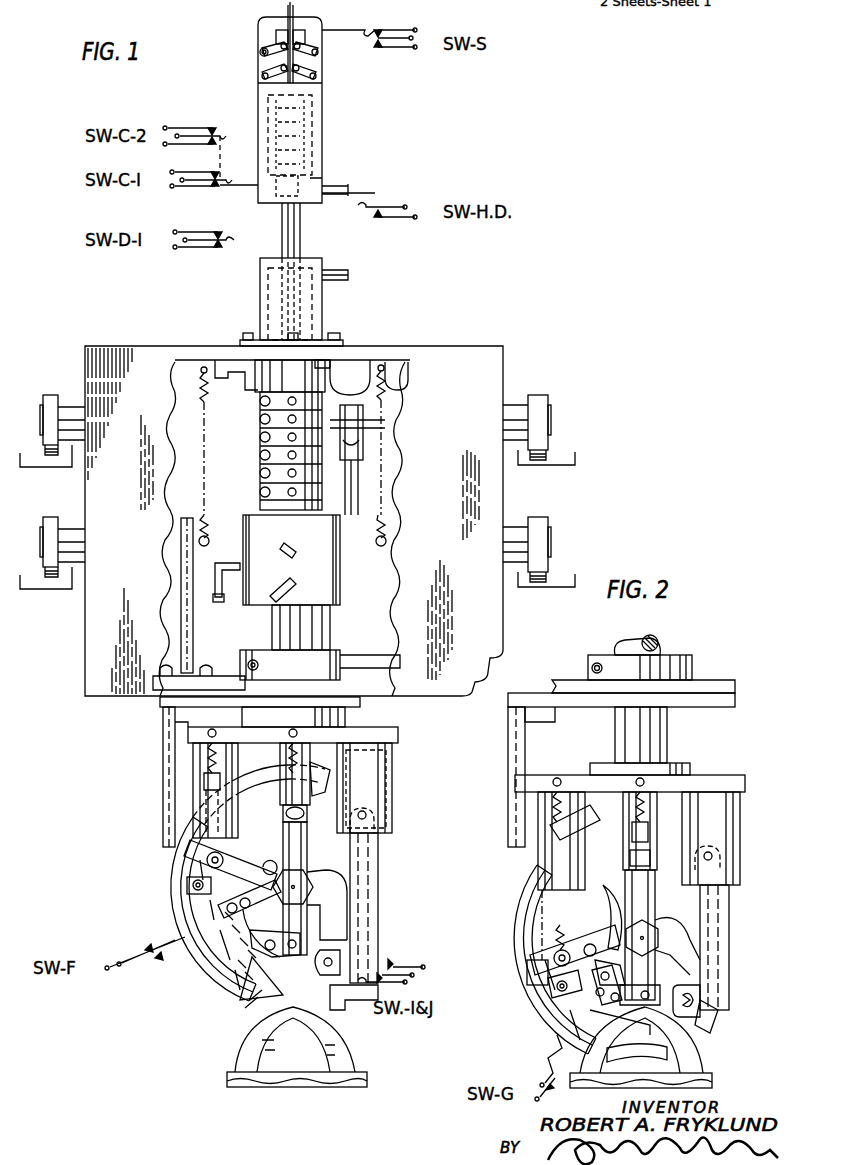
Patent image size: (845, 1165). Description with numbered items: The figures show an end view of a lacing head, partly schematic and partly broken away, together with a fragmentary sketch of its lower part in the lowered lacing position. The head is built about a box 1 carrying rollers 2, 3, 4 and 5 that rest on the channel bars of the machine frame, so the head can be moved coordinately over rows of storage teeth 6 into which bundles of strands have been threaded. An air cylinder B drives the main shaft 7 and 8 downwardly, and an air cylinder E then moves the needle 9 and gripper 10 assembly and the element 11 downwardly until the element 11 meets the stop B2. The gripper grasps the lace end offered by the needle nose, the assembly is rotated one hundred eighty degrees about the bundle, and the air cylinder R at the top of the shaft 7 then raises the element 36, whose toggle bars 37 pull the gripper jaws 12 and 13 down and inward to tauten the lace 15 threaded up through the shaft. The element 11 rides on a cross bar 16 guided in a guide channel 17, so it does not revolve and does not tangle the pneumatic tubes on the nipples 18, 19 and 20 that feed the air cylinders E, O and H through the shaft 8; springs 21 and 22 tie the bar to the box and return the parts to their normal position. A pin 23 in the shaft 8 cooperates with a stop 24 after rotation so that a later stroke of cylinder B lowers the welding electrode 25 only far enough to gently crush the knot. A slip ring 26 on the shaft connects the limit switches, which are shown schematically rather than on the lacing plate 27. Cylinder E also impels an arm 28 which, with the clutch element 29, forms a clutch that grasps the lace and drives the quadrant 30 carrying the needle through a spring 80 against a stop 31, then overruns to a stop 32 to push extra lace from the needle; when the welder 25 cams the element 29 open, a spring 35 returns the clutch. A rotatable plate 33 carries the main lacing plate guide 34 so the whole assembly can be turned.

In FIG. 1, the box 1 is at (490, 348).
In FIG. 1, the roller 2 is at (538, 395).
In FIG. 1, the roller 3 is at (538, 517).
In FIG. 1, the roller 4 is at (48, 395).
In FIG. 1, the roller 5 is at (48, 517).
In FIG. 1, the storage teeth 6 is at (247, 1035).
In FIG. 2, the storage teeth 6 is at (630, 1010).
In FIG. 1, the main shaft 7 is at (297, 232).
In FIG. 1, the main shaft 8 is at (272, 628).
In FIG. 2, the main shaft 8 is at (660, 640).
In FIG. 1, the needle 9 is at (245, 1000).
In FIG. 2, the needle 9 is at (640, 1057).
In FIG. 1, the gripper 10 is at (345, 1003).
In FIG. 2, the gripper 10 is at (705, 1038).
In FIG. 1, the element 11 is at (250, 600).
In FIG. 2, the element 11 is at (690, 652).
In FIG. 1, the gripper jaw 12 is at (283, 58).
In FIG. 1, the gripper jaw 13 is at (300, 58).
In FIG. 1, the lace 15 is at (290, 14).
In FIG. 1, the cross bar 16 is at (218, 528).
In FIG. 1, the guide channel 17 is at (182, 583).
In FIG. 1, the nipple 18 is at (215, 580).
In FIG. 1, the nipple 19 is at (283, 588).
In FIG. 1, the nipple 20 is at (282, 545).
In FIG. 1, the spring 21 is at (206, 385).
In FIG. 1, the spring 22 is at (386, 385).
In FIG. 1, the pin 23 is at (330, 363).
In FIG. 1, the stop 24 is at (245, 395).
In FIG. 1, the welding electrode 25 is at (307, 850).
In FIG. 2, the welding electrode 25 is at (655, 905).
In FIG. 1, the slip ring 26 is at (350, 478).
In FIG. 1, the lacing plate 27 is at (170, 853).
In FIG. 2, the lacing plate 27 is at (520, 890).
In FIG. 1, the arm 28 is at (235, 860).
In FIG. 2, the arm 28 is at (570, 912).
In FIG. 2, the clutch element 29 is at (612, 922).
In FIG. 1, the quadrant 30 is at (248, 910).
In FIG. 2, the quadrant 30 is at (570, 1000).
In FIG. 1, the stop 31 is at (265, 950).
In FIG. 2, the stop 31 is at (590, 1010).
In FIG. 1, the stop 32 is at (200, 890).
In FIG. 2, the stop 32 is at (548, 985).
In FIG. 1, the plate 33 is at (160, 702).
In FIG. 2, the plate 33 is at (700, 700).
In FIG. 1, the main lacing plate guide 34 is at (163, 750).
In FIG. 2, the main lacing plate guide 34 is at (508, 750).
In FIG. 2, the spring 35 is at (557, 795).
In FIG. 1, the element 36 is at (260, 50).
In FIG. 1, the toggle bar 37 is at (275, 40).
In FIG. 1, the spring 80 is at (230, 905).
In FIG. 2, the spring 80 is at (600, 980).
In FIG. 1, the air cylinder R is at (317, 112).
In FIG. 1, the air cylinder B is at (264, 294).
In FIG. 1, the stop B2 is at (335, 655).
In FIG. 1, the air cylinder E is at (238, 760).
In FIG. 2, the air cylinder E is at (540, 840).
In FIG. 1, the air cylinder O is at (312, 770).
In FIG. 2, the air cylinder O is at (657, 825).
In FIG. 1, the air cylinder H is at (392, 776).
In FIG. 2, the air cylinder H is at (740, 820).